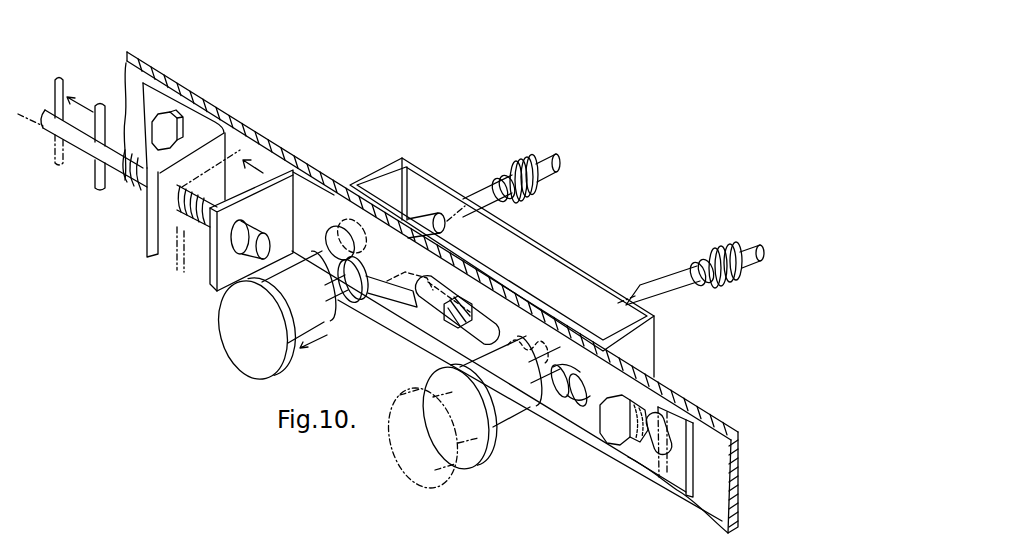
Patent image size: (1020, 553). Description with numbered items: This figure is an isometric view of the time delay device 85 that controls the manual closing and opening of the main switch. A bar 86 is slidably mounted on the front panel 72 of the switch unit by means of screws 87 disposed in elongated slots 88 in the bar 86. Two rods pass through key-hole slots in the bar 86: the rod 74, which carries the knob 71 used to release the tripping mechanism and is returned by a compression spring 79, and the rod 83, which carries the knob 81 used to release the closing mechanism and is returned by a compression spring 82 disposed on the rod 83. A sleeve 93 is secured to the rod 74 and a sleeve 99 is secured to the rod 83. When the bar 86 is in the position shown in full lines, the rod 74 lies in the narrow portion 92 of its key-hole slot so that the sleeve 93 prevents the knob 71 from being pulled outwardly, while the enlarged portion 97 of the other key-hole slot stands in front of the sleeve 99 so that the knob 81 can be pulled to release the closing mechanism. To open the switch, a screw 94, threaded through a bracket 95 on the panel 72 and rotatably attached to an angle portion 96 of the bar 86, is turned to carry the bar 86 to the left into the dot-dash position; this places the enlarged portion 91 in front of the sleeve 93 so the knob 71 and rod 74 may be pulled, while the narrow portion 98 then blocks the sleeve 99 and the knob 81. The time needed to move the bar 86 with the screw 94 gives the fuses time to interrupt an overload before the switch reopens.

The knob 71 is at (500, 368).
The front panel 72 is at (669, 391).
The rod 74 is at (758, 245).
The compression spring 79 is at (693, 265).
The knob 81 is at (297, 282).
The compression spring 82 is at (492, 180).
The rod 83 is at (547, 157).
The time delay device 85 is at (181, 290).
The bar 86 is at (310, 187).
The screws 87 is at (460, 297).
The elongated slots 88 is at (465, 337).
The enlarged portion 91 is at (575, 420).
The narrow portion 92 is at (585, 398).
The sleeve 93 is at (620, 328).
The screw 94 is at (118, 175).
The bracket 95 is at (147, 250).
The angle portion 96 is at (212, 283).
The enlarged portion 97 is at (372, 237).
The narrow portion 98 is at (388, 305).
The sleeve 99 is at (338, 268).